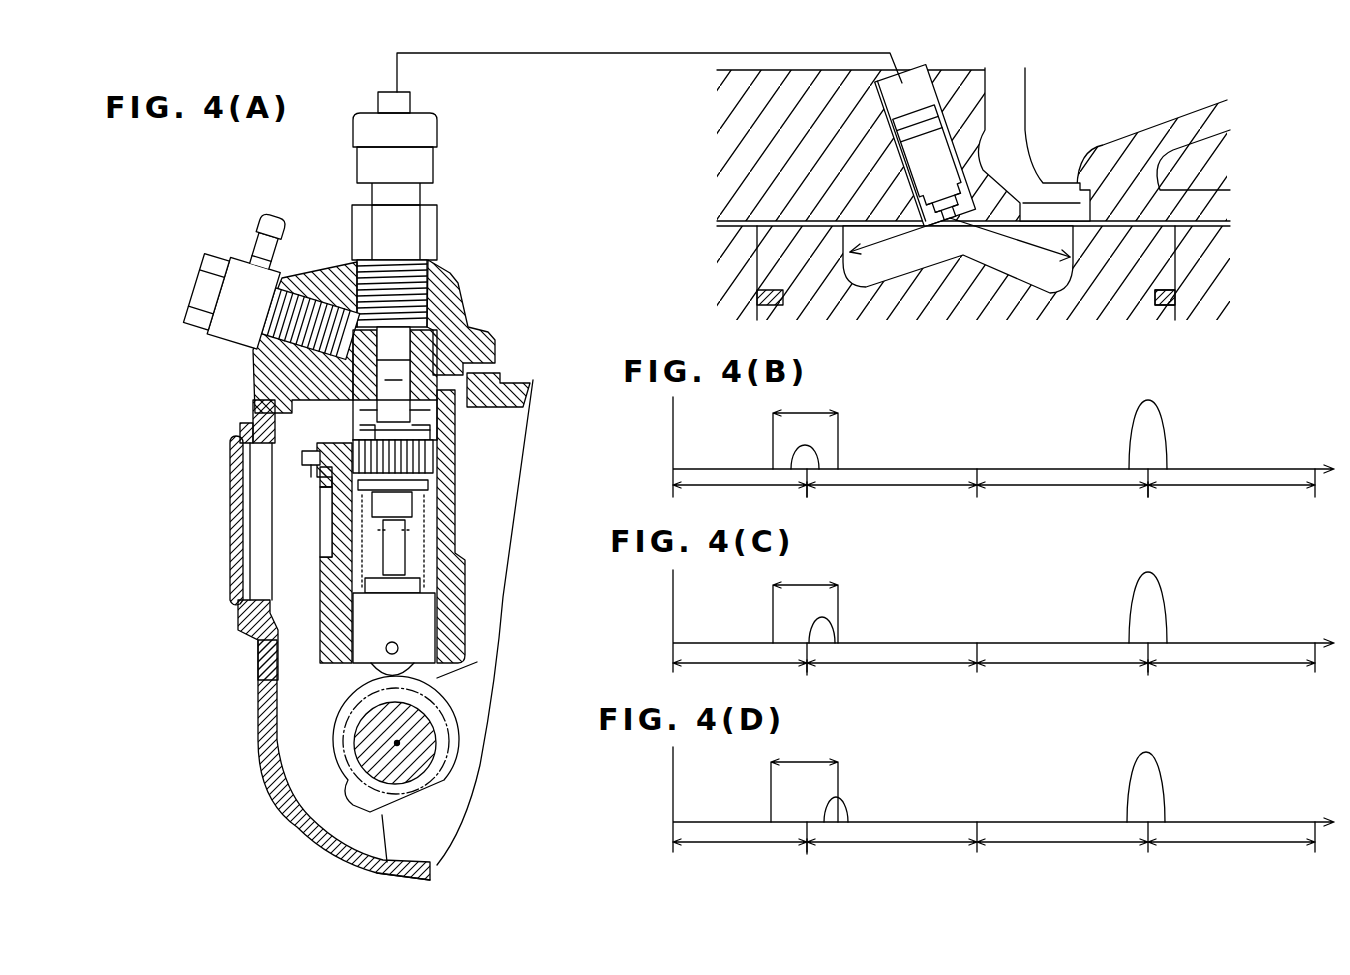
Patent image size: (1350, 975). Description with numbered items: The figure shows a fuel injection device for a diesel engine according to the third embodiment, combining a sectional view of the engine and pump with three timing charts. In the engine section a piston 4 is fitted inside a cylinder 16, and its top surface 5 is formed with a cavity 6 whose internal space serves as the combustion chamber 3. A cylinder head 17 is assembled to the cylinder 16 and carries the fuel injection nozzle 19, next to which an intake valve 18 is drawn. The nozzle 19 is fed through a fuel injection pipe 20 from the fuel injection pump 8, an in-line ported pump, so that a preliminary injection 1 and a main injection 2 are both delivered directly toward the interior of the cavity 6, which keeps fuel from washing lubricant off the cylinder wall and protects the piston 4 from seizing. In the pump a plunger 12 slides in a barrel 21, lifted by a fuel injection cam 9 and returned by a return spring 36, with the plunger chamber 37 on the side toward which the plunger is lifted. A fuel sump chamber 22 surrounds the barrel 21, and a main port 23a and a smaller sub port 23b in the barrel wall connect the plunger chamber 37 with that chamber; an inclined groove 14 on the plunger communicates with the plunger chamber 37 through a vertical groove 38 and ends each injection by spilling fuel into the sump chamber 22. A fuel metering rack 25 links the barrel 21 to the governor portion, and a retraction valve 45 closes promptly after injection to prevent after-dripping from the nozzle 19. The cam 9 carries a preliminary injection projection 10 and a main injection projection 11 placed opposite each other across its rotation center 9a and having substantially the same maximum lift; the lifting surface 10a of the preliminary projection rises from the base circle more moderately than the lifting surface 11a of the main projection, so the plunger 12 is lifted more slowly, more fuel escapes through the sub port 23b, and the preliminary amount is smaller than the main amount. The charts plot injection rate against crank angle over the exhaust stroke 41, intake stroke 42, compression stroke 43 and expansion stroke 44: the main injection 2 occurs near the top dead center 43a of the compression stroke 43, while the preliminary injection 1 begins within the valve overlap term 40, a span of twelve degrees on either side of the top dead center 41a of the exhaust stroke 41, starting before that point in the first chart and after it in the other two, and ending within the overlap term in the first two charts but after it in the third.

In FIG. 4B, the preliminary injection 1 is at (795, 458).
In FIG. 4C, the preliminary injection 1 is at (812, 632).
In FIG. 4D, the preliminary injection 1 is at (826, 812).
In FIG. 4B, the main injection 2 is at (1128, 442).
In FIG. 4C, the main injection 2 is at (1128, 620).
In FIG. 4D, the main injection 2 is at (1128, 797).
In FIG. 4A, the combustion chamber 3 is at (1012, 288).
In FIG. 4A, the piston 4 is at (1110, 308).
In FIG. 4A, the top surface 5 is at (1150, 207).
In FIG. 4A, the cavity 6 is at (944, 261).
In FIG. 4A, the fuel injection pump 8 is at (473, 521).
In FIG. 4A, the fuel injection cam 9 is at (430, 788).
In FIG. 4A, the rotation center 9a is at (400, 743).
In FIG. 4A, the preliminary injection projection 10 is at (455, 705).
In FIG. 4A, the lifting surface 10a is at (477, 662).
In FIG. 4A, the main injection projection 11 is at (350, 802).
In FIG. 4A, the lifting surface 11a is at (383, 873).
In FIG. 4A, the plunger 12 is at (395, 440).
In FIG. 4A, the inclined groove 14 is at (455, 438).
In FIG. 4A, the cylinder 16 is at (1200, 262).
In FIG. 4A, the cylinder head 17 is at (1215, 215).
In FIG. 4A, the intake valve 18 is at (1026, 108).
In FIG. 4A, the fuel injection nozzle 19 is at (902, 88).
In FIG. 4A, the fuel injection pipe 20 is at (628, 58).
In FIG. 4A, the barrel 21 is at (453, 297).
In FIG. 4A, the fuel sump chamber 22 is at (373, 358).
In FIG. 4A, the main port 23a is at (403, 380).
In FIG. 4A, the sub port 23b is at (322, 400).
In FIG. 4A, the fuel metering rack 25 is at (299, 483).
In FIG. 4A, the return spring 36 is at (370, 517).
In FIG. 4A, the plunger chamber 37 is at (350, 271).
In FIG. 4A, the vertical groove 38 is at (372, 420).
In FIG. 4B, the valve overlap term 40 is at (815, 412).
In FIG. 4C, the valve overlap term 40 is at (812, 584).
In FIG. 4D, the valve overlap term 40 is at (812, 762).
In FIG. 4B, the exhaust stroke 41 is at (725, 490).
In FIG. 4C, the exhaust stroke 41 is at (730, 668).
In FIG. 4D, the exhaust stroke 41 is at (728, 847).
In FIG. 4B, the top dead center of exhaust stroke 41a is at (807, 493).
In FIG. 4C, the top dead center of exhaust stroke 41a is at (807, 671).
In FIG. 4D, the top dead center of exhaust stroke 41a is at (807, 850).
In FIG. 4B, the intake stroke 42 is at (905, 490).
In FIG. 4C, the intake stroke 42 is at (908, 668).
In FIG. 4D, the intake stroke 42 is at (905, 847).
In FIG. 4B, the compression stroke 43 is at (1045, 490).
In FIG. 4C, the compression stroke 43 is at (1050, 668).
In FIG. 4D, the compression stroke 43 is at (1058, 847).
In FIG. 4B, the top dead center of compression stroke 43a is at (1148, 493).
In FIG. 4C, the top dead center of compression stroke 43a is at (1148, 671).
In FIG. 4B, the expansion stroke 44 is at (1218, 490).
In FIG. 4C, the expansion stroke 44 is at (1232, 668).
In FIG. 4D, the expansion stroke 44 is at (1215, 847).
In FIG. 4A, the retraction valve 45 is at (403, 258).